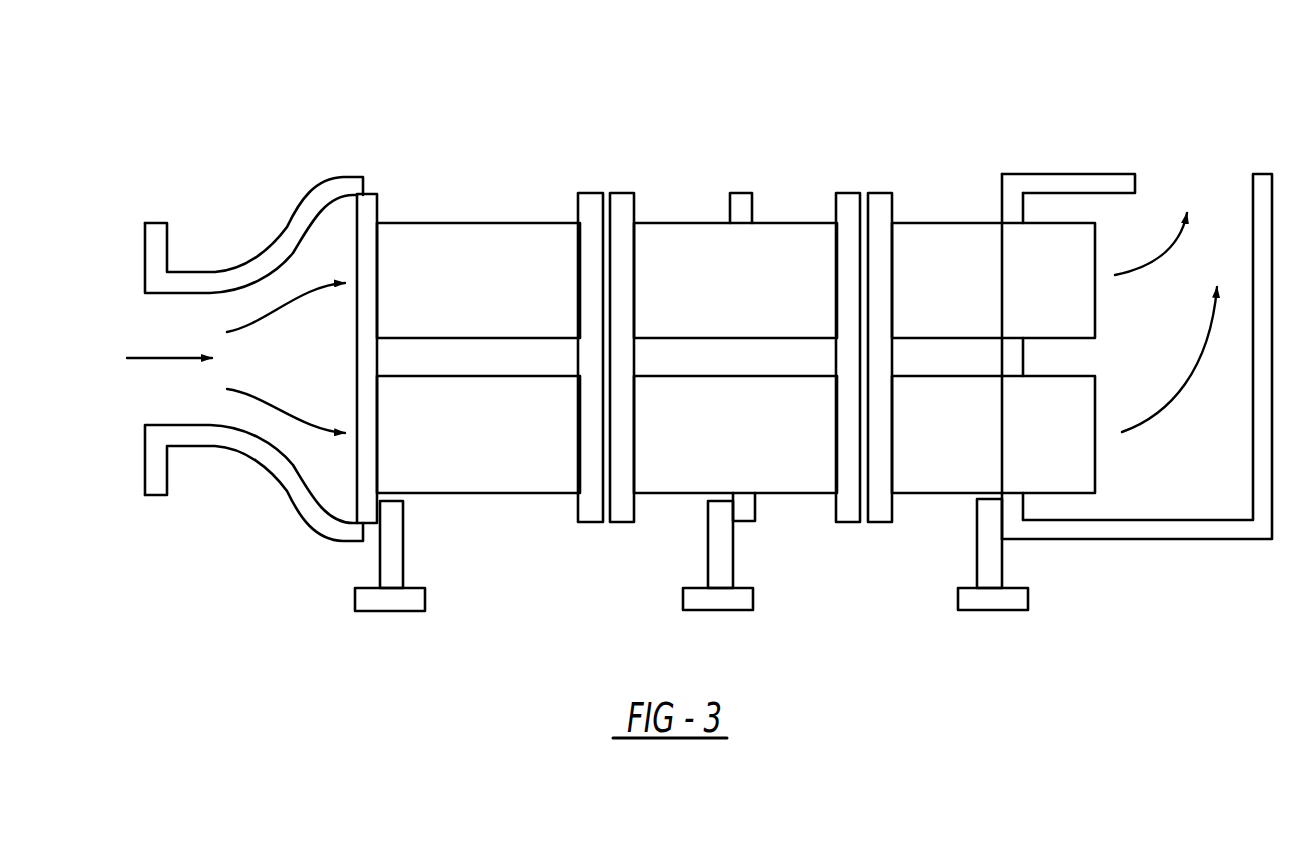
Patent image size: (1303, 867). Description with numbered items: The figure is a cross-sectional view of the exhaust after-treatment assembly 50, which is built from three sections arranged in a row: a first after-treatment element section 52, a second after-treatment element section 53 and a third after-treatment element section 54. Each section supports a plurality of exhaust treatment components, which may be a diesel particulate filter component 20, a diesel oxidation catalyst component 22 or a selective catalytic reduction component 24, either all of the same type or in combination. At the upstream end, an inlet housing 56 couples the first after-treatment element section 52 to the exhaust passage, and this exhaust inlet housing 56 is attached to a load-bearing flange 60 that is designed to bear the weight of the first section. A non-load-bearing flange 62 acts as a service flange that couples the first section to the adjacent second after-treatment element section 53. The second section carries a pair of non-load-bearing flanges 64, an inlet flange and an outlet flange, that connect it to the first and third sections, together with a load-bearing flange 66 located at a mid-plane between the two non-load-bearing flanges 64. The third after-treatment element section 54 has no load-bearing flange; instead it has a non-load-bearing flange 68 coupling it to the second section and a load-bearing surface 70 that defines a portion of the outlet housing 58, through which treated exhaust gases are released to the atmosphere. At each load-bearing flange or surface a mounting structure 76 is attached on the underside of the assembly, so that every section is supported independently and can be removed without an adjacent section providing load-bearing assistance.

The diesel particulate filter component 20 is at (736, 358).
The diesel oxidation catalyst component 22 is at (736, 358).
The selective catalytic reduction component 24 is at (533, 287).
The exhaust after-treatment assembly 50 is at (813, 342).
The first after-treatment element section 52 is at (736, 282).
The second after-treatment element section 53 is at (736, 282).
The third after-treatment element section 54 is at (1052, 298).
The inlet housing 56 is at (290, 498).
The outlet housing 58 is at (1121, 337).
The load-bearing flange 60 is at (357, 495).
The non-load-bearing flange 62 is at (577, 195).
The non-load-bearing flanges 64 is at (650, 198).
The load-bearing flange 66 is at (752, 207).
The non-load-bearing flange 68 is at (892, 198).
The load-bearing surface 70 is at (1002, 190).
The mounting structure 76 is at (410, 613).